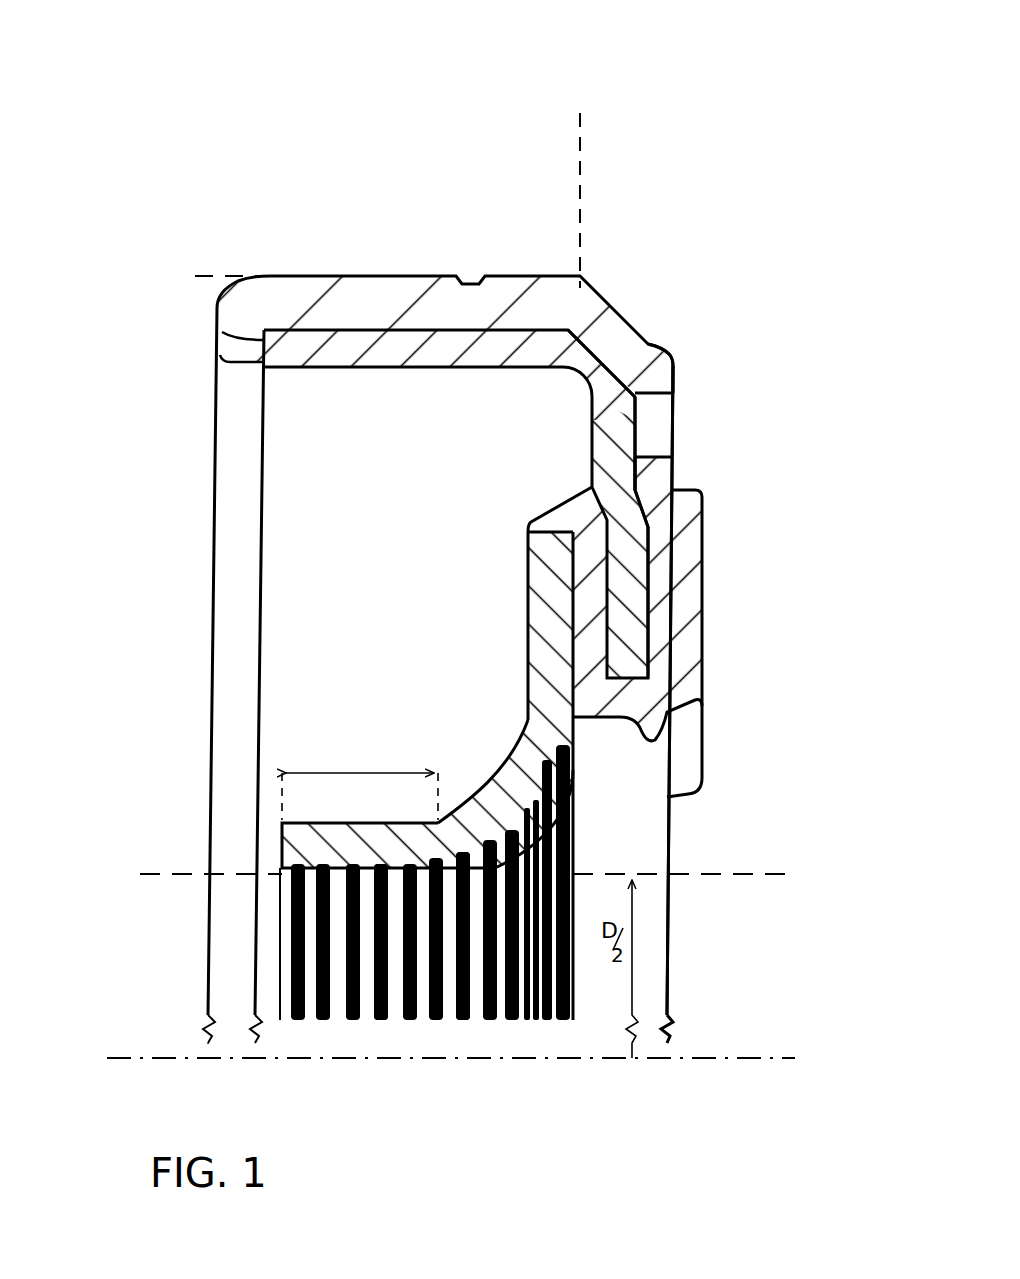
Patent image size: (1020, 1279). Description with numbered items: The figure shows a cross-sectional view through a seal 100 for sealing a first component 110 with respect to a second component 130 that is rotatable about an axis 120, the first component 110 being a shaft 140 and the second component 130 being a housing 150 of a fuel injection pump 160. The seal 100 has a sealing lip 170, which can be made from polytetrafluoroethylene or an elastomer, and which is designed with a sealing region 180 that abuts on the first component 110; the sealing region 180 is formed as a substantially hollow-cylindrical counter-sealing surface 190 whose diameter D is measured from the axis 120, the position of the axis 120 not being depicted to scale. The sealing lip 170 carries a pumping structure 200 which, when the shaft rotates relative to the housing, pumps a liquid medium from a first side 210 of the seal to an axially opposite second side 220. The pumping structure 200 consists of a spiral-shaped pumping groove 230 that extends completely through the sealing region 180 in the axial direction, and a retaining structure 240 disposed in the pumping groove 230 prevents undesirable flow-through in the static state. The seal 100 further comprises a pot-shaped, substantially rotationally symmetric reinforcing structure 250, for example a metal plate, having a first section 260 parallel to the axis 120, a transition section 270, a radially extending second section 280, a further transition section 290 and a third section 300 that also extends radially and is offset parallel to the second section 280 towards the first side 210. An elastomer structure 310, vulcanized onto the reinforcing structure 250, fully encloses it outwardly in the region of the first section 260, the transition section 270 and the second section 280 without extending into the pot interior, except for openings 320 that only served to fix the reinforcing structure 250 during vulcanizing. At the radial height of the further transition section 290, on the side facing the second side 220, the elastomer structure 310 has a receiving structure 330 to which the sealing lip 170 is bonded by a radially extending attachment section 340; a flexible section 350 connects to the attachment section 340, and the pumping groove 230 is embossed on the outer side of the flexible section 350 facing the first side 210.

The seal 100 is at (600, 298).
The first component 110 is at (758, 876).
The axis 120 is at (770, 1058).
The second component 130 is at (583, 190).
The shaft 140 is at (758, 876).
The housing 150 is at (620, 178).
The pump 160 is at (632, 55).
The sealing lip 170 is at (305, 824).
The sealing region 180 is at (337, 758).
The counter-sealing surface 190 is at (337, 897).
The pumping structure 200 is at (473, 1020).
The first side 210 is at (818, 736).
The second side 220 is at (99, 866).
The pumping groove 230 is at (417, 1023).
The retaining structure 240 is at (372, 975).
The reinforcing structure 250 is at (497, 334).
The first section 260 is at (357, 332).
The transition section 270 is at (604, 357).
The second section 280 is at (625, 413).
The further transition section 290 is at (625, 510).
The third section 300 is at (640, 583).
The elastomer structure 310 is at (670, 357).
The openings 320 is at (662, 432).
The receiving structure 330 is at (563, 513).
The attachment section 340 is at (537, 598).
The flexible section 350 is at (512, 778).